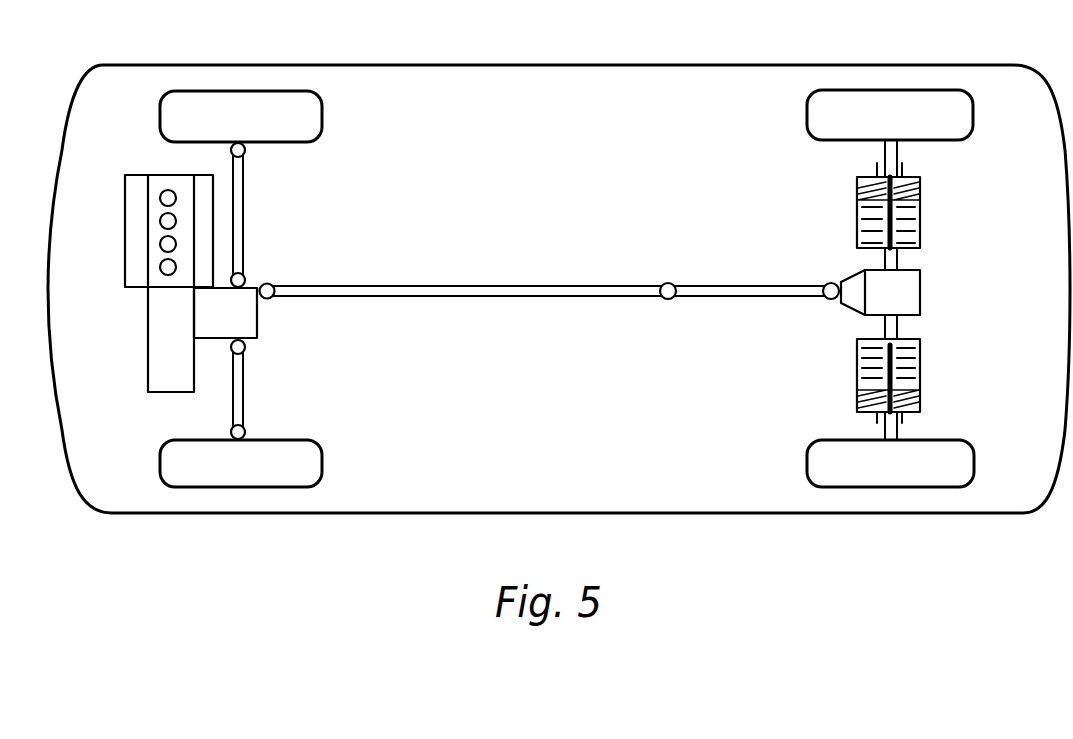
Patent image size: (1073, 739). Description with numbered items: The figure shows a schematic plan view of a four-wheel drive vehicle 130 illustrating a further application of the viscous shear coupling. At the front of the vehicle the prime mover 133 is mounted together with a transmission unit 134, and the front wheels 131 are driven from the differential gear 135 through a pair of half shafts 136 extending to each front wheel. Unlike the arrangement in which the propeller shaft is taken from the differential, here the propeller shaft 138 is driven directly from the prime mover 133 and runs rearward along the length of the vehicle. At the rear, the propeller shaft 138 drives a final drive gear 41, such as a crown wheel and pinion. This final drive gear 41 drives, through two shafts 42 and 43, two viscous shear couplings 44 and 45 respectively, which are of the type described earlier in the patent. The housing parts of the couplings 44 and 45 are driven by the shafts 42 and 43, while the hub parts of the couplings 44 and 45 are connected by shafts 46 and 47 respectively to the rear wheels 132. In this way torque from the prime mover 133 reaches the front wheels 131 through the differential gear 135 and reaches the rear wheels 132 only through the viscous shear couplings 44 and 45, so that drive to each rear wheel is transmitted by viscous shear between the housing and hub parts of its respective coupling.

The vehicle body 130 is at (657, 78).
The front wheels 131 is at (303, 100).
The rear wheels 132 is at (957, 100).
The prime mover 133 is at (160, 181).
The transmission 134 is at (157, 345).
The differential gear 135 is at (250, 325).
The front drive half-shafts 136 is at (243, 225).
The propeller shaft 138 is at (510, 289).
The final drive gear 41 is at (908, 296).
The shaft 42 is at (897, 258).
The shaft 43 is at (896, 328).
The viscous shear coupling 44 is at (918, 232).
The viscous shear coupling 45 is at (918, 377).
The shaft 46 is at (883, 153).
The shaft 47 is at (885, 432).